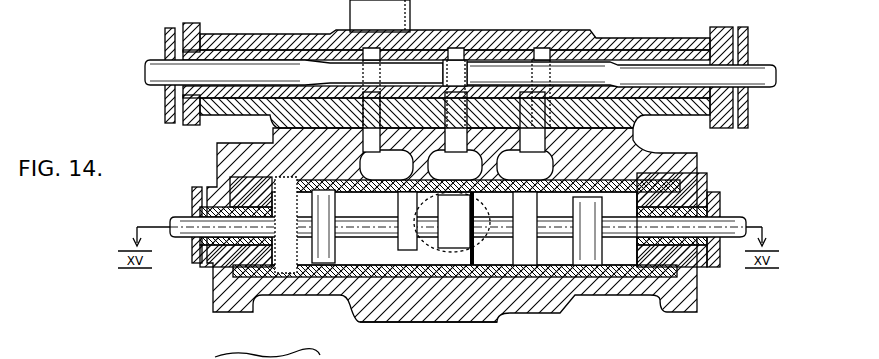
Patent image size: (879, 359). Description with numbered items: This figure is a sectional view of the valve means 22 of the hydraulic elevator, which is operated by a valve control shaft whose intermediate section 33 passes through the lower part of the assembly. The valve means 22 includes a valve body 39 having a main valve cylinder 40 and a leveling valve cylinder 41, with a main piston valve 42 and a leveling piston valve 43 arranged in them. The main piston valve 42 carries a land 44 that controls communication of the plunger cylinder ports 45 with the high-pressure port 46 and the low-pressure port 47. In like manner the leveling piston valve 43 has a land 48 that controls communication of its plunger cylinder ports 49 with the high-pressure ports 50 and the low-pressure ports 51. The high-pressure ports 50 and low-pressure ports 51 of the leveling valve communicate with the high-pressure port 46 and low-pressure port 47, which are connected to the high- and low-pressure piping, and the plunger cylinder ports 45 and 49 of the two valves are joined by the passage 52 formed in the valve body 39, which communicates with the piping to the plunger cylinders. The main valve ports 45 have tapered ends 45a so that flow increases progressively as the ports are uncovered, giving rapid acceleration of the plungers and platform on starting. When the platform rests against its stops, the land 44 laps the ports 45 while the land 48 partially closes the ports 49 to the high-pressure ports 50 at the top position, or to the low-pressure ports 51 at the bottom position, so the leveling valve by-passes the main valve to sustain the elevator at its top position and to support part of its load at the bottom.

The valve means 22 is at (740, 164).
The intermediate section 33 is at (182, 216).
The valve body 39 is at (490, 313).
The main valve cylinder 40 is at (342, 294).
The leveling valve cylinder 41 is at (322, 58).
The main piston valve 42 is at (553, 232).
The leveling piston valve 43 is at (510, 72).
The land 44 is at (443, 252).
The plunger cylinder ports 45 is at (453, 267).
The tapered ends 45a is at (454, 221).
The high-pressure port 46 is at (523, 267).
The low-pressure port 47 is at (380, 277).
The land 48 is at (463, 68).
The plunger cylinder ports 49 is at (458, 48).
The high-pressure ports 50 is at (548, 50).
The low-pressure ports 51 is at (377, 48).
The passage 52 is at (412, 166).